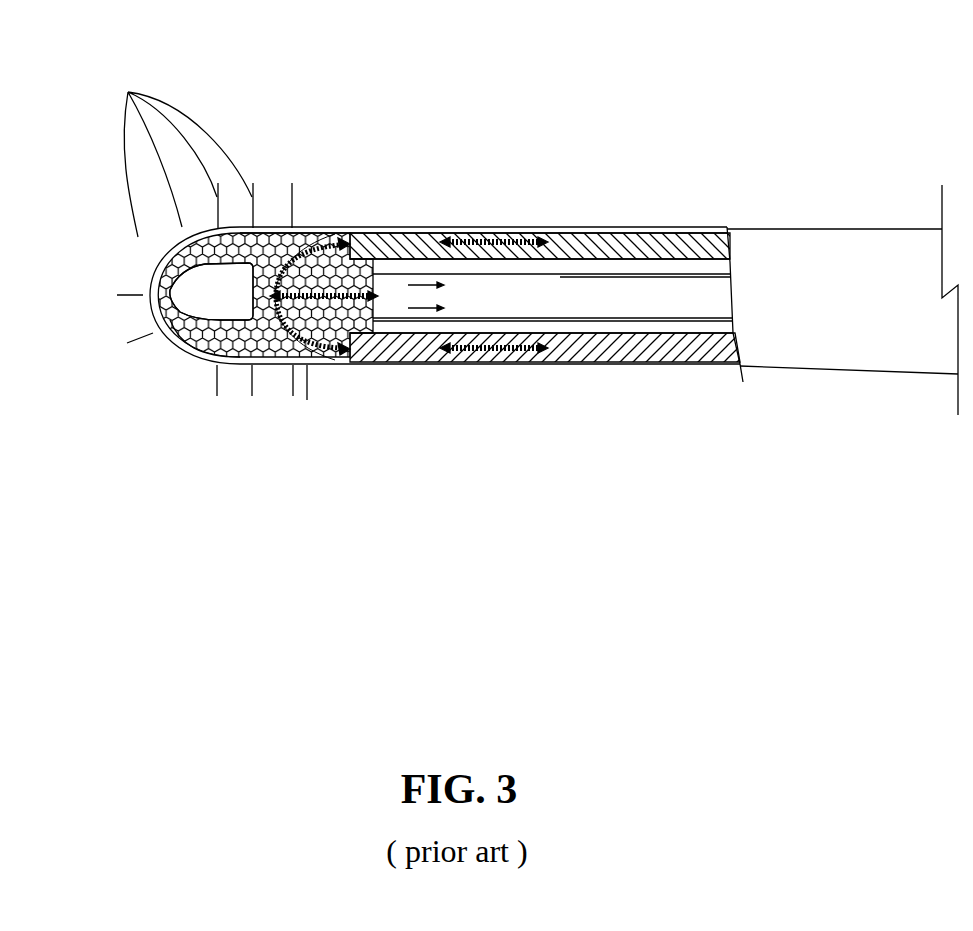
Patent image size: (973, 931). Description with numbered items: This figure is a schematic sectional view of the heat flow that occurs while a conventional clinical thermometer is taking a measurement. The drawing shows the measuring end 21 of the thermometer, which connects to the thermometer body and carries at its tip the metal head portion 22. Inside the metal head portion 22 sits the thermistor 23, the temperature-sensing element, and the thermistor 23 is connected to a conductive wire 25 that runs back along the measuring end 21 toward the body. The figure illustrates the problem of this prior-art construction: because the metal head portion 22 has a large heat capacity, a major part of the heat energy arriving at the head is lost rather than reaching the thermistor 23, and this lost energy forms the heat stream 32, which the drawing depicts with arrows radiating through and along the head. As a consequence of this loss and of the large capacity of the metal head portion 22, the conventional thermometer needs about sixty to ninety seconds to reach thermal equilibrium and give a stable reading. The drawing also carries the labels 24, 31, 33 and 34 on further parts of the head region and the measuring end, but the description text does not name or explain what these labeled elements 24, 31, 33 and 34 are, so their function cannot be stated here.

The measuring end 21 is at (612, 228).
The metal head portion 22 is at (334, 227).
The thermistor 23 is at (207, 296).
The porous wall portion 24 is at (238, 332).
The conductive wire 25 is at (466, 272).
The outer skin layers 31 is at (128, 92).
The heat stream 32 is at (349, 360).
The heating wire 33 is at (518, 240).
The channel 34 is at (412, 270).